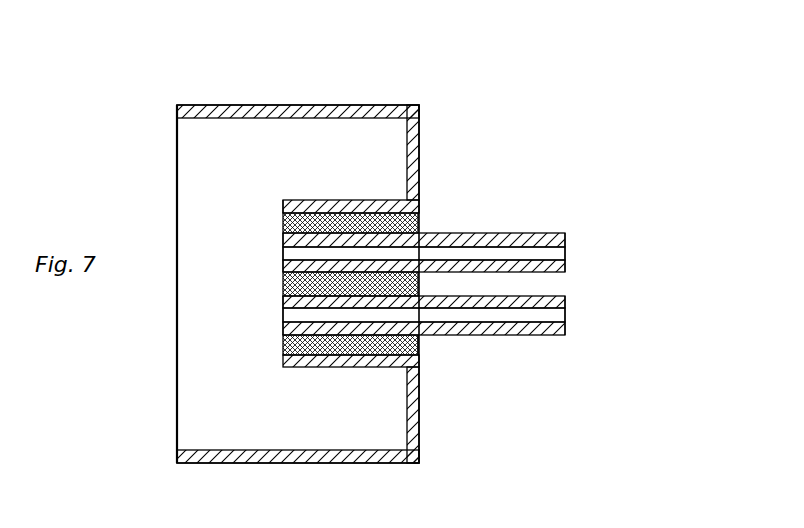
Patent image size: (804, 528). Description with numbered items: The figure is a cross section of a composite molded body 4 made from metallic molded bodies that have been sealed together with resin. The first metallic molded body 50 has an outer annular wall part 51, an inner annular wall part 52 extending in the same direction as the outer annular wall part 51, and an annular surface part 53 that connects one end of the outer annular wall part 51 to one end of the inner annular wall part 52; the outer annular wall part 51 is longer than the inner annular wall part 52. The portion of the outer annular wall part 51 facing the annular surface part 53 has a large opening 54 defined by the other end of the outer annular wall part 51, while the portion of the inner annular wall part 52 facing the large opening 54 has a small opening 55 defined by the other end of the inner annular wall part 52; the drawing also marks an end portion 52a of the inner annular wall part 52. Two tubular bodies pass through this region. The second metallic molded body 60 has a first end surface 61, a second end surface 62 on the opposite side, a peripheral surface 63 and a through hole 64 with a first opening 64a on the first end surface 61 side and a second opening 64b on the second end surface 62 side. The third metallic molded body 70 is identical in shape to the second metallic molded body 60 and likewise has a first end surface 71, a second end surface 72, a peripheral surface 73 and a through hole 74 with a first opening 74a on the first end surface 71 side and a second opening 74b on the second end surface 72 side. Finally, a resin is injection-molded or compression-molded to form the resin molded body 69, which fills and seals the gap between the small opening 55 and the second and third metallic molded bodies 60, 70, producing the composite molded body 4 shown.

The composite molded body 4 is at (480, 145).
The first metallic molded body 50 is at (337, 102).
The outer annular wall part 51 is at (260, 105).
The inner annular wall part 52 is at (362, 200).
The end of step wall 52a is at (297, 200).
The annular surface part 53 is at (420, 128).
The large opening 54 is at (178, 410).
The small opening 55 is at (283, 290).
The second metallic molded body 60 is at (440, 211).
The first end surface 61 is at (282, 265).
The second end surface 62 is at (565, 242).
The peripheral surface 63 is at (418, 237).
The through hole 64 is at (440, 211).
The first opening 64a is at (282, 253).
The second opening 64b is at (565, 250).
The resin molded body 69 is at (334, 352).
The third metallic molded body 70 is at (437, 338).
The first end surface 71 is at (282, 337).
The second end surface 72 is at (565, 333).
The peripheral surface 73 is at (426, 337).
The through hole 74 is at (437, 337).
The first opening 74a is at (282, 318).
The second opening 74b is at (565, 315).